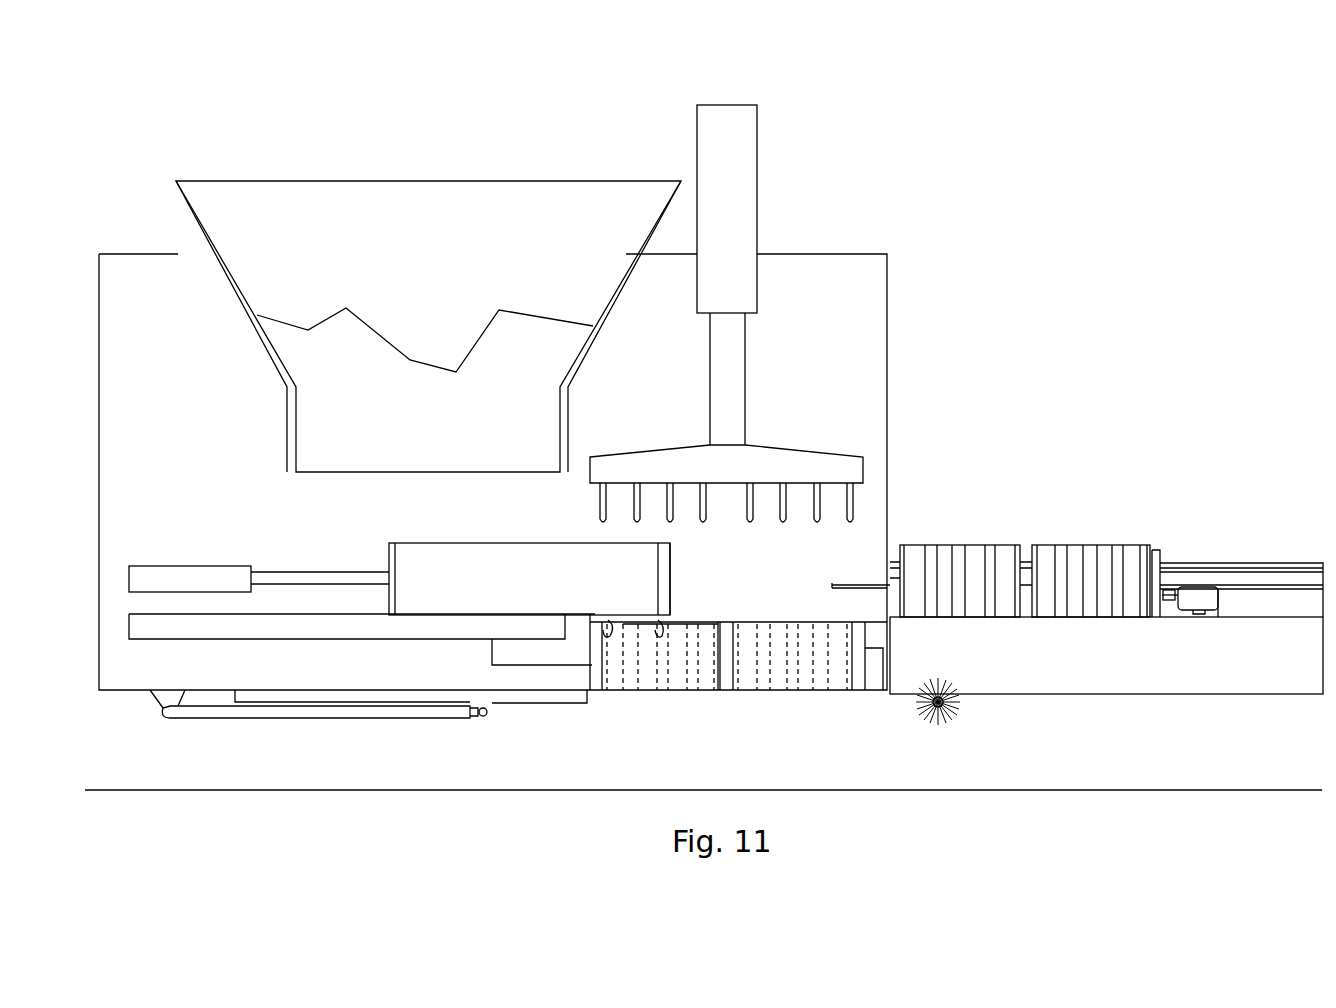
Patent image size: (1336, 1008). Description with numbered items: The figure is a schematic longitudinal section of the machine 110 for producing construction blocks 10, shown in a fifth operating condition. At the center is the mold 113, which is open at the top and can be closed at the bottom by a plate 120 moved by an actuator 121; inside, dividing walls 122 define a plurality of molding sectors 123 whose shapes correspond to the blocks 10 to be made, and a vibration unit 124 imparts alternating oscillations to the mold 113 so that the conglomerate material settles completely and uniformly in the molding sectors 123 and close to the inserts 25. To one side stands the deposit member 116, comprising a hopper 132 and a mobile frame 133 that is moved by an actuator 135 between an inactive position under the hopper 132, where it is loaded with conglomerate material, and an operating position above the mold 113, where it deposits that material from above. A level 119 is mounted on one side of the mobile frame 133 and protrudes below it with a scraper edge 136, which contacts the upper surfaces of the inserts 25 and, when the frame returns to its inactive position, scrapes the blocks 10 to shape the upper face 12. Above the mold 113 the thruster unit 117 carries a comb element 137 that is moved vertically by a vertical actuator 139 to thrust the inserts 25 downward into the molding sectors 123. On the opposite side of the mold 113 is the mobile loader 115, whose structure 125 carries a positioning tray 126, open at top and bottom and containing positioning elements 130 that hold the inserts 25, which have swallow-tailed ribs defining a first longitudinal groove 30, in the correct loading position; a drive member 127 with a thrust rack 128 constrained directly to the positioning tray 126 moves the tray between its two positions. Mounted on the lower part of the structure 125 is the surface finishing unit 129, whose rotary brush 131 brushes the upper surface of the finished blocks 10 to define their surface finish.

The machine 110 is at (1006, 148).
The deposit member 116 is at (178, 284).
The hopper 132 is at (490, 208).
The thruster unit 117 is at (771, 180).
The vertical actuator 139 is at (740, 230).
The comb element 137 is at (797, 468).
The actuator 135 is at (200, 580).
The mobile frame 133 is at (389, 558).
The level 119 is at (668, 566).
The vibration unit 124 is at (505, 660).
The mold 113 is at (584, 680).
The construction block 10 is at (786, 614).
The molding sector 123 is at (610, 620).
The scraper edge 136 is at (660, 620).
The dividing wall 122 is at (724, 632).
The upper face 12 is at (684, 625).
The plate 120 is at (540, 700).
The actuator 121 is at (338, 712).
The mobile loader 115 is at (1155, 530).
The structure 125 is at (1290, 672).
The insert 25 is at (955, 575).
The positioning element 130 is at (900, 595).
The first longitudinal groove 30 is at (1040, 590).
The positioning tray 126 is at (1158, 585).
The thrust rack 128 is at (1166, 598).
The drive member 127 is at (1200, 598).
The rotary brush 131 is at (932, 715).
The surface finishing unit 129 is at (955, 730).